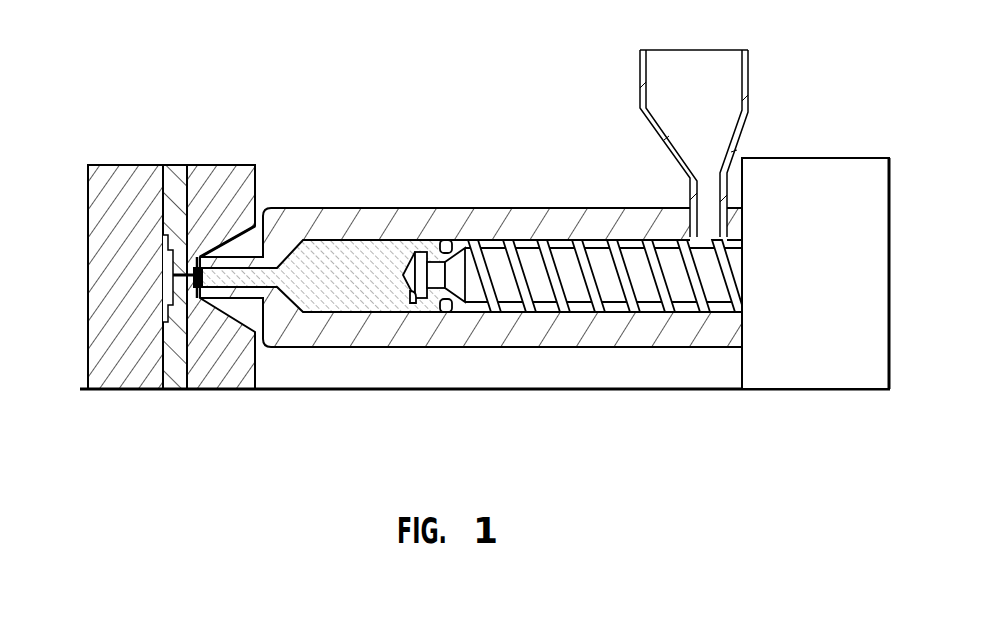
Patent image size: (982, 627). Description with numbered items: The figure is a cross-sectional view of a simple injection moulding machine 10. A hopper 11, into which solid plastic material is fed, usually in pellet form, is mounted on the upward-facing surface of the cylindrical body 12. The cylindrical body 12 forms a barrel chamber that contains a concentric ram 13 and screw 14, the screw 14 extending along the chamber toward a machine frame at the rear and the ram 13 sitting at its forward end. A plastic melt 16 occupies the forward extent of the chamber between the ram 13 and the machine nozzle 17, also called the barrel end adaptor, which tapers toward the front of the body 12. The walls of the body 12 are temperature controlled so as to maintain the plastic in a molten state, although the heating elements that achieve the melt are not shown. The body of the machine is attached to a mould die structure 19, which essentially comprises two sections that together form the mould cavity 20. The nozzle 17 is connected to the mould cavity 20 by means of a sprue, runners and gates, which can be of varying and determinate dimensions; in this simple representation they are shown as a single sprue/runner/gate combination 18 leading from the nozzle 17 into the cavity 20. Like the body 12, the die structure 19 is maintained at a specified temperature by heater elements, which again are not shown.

The injection moulding machine 10 is at (515, 112).
The hopper 11 is at (722, 88).
The cylindrical body 12 is at (437, 212).
The ram 13 is at (410, 300).
The screw 14 is at (592, 265).
The plastic melt 16 is at (343, 250).
The machine nozzle 17 is at (248, 287).
The sprue/runner/gate combination 18 is at (191, 262).
The mould die structure 19 is at (131, 375).
The mould cavity 20 is at (140, 272).